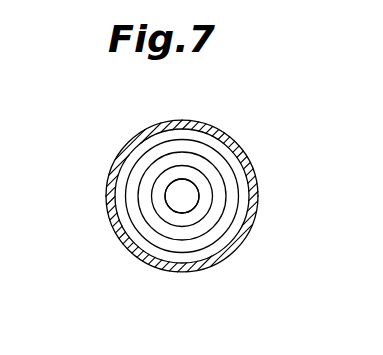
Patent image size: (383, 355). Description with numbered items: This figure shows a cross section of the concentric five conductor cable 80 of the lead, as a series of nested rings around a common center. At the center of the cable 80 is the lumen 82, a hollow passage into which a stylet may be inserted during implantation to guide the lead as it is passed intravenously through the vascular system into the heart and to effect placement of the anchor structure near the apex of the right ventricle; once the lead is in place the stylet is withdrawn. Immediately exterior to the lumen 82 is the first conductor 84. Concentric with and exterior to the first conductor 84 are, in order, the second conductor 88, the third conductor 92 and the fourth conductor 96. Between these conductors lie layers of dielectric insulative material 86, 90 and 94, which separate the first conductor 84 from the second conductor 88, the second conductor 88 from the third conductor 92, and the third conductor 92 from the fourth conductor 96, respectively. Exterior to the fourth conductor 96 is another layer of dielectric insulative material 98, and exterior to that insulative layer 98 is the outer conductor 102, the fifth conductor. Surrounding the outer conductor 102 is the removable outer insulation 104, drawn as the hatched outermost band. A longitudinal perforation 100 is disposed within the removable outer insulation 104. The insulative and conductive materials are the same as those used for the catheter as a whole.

The cable 80 is at (200, 98).
The lumen 82 is at (195, 192).
The first conductor 84 is at (191, 199).
The dielectric insulative material 86 is at (199, 192).
The second conductor 88 is at (201, 184).
The dielectric insulative material 90 is at (118, 220).
The third conductor 92 is at (140, 202).
The dielectric insulative material 94 is at (130, 181).
The fourth conductor 96 is at (122, 158).
The dielectric insulative material 98 is at (140, 150).
The longitudinal perforation 100 is at (188, 119).
The outer conductor 102 is at (127, 247).
The removable outer insulation 104 is at (152, 267).